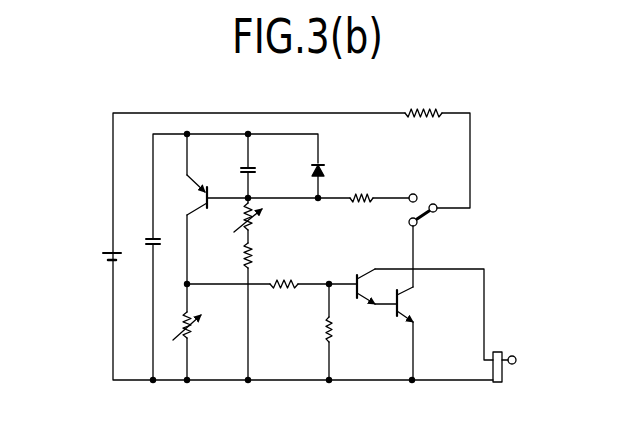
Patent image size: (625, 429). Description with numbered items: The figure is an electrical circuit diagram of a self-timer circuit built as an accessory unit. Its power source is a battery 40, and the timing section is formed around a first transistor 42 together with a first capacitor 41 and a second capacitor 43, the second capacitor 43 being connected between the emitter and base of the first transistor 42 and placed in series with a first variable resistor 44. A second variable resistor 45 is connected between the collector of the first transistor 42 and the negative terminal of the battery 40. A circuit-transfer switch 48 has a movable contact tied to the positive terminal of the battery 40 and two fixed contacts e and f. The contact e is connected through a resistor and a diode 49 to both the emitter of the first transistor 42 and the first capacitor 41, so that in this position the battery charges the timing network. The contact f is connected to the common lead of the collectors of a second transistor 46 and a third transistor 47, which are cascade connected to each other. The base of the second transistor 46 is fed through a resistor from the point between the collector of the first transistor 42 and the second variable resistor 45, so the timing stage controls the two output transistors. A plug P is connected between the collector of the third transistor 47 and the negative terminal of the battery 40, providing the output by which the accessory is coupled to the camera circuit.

The battery 40 is at (106, 254).
The first capacitor 41 is at (148, 240).
The first transistor 42 is at (202, 190).
The second capacitor 43 is at (256, 172).
The first variable resistor 44 is at (254, 222).
The second variable resistor 45 is at (196, 328).
The second transistor 46 is at (362, 277).
The third transistor 47 is at (403, 308).
The circuit-transfer switch 48 is at (421, 208).
The diode 49 is at (325, 172).
The fixed contact e is at (411, 194).
The fixed contact f is at (408, 222).
The plug P is at (503, 376).